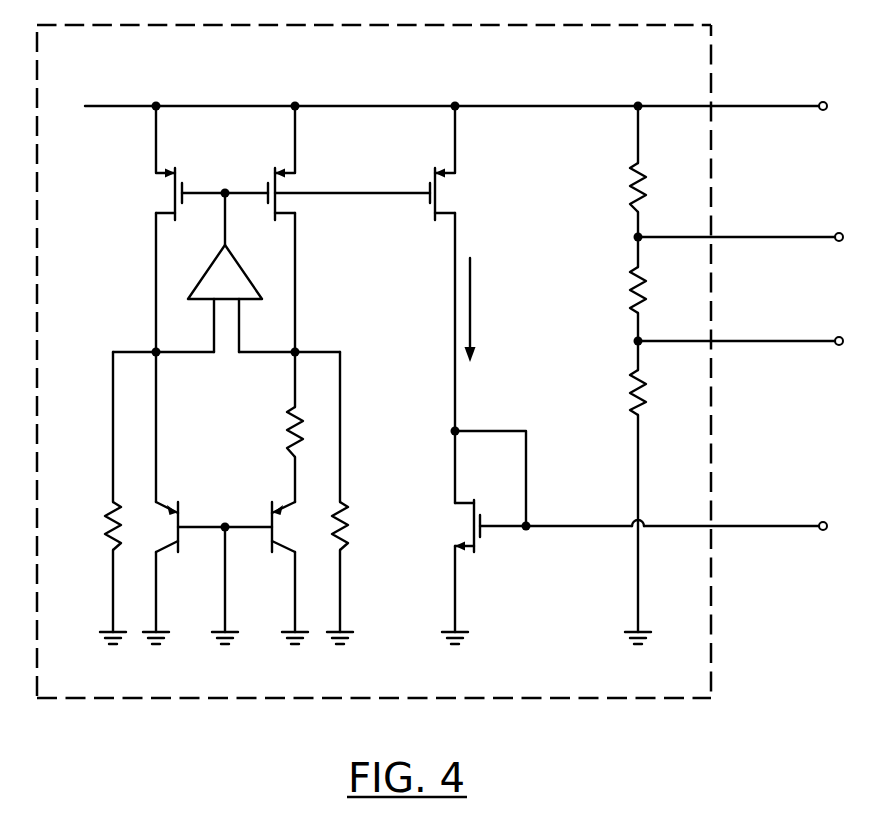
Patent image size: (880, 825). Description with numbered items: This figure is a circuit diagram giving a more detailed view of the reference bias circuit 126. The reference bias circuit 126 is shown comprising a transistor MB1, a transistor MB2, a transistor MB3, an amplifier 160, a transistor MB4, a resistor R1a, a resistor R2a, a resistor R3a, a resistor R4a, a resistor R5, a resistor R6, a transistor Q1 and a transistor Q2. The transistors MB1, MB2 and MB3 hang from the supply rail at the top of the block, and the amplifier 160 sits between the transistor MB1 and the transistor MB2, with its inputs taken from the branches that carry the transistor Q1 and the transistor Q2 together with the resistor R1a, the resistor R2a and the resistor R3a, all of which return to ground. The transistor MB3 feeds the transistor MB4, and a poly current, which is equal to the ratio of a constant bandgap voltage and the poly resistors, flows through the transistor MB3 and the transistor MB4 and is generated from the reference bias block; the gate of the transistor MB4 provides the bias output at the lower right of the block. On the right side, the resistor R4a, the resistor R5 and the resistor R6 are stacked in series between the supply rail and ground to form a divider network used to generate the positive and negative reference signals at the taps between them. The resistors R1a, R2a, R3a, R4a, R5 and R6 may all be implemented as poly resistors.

The reference bias circuit 126 is at (119, 25).
The amplifier 160 is at (267, 250).
The transistor MB1 is at (146, 163).
The transistor MB2 is at (306, 163).
The transistor MB3 is at (461, 163).
The transistor MB4 is at (453, 526).
The transistor Q1 is at (202, 527).
The transistor Q2 is at (295, 527).
The resistor R1a is at (88, 526).
The resistor R2a is at (361, 526).
The resistor R3a is at (270, 432).
The resistor R4a is at (614, 187).
The resistor R5 is at (620, 290).
The resistor R6 is at (620, 392).